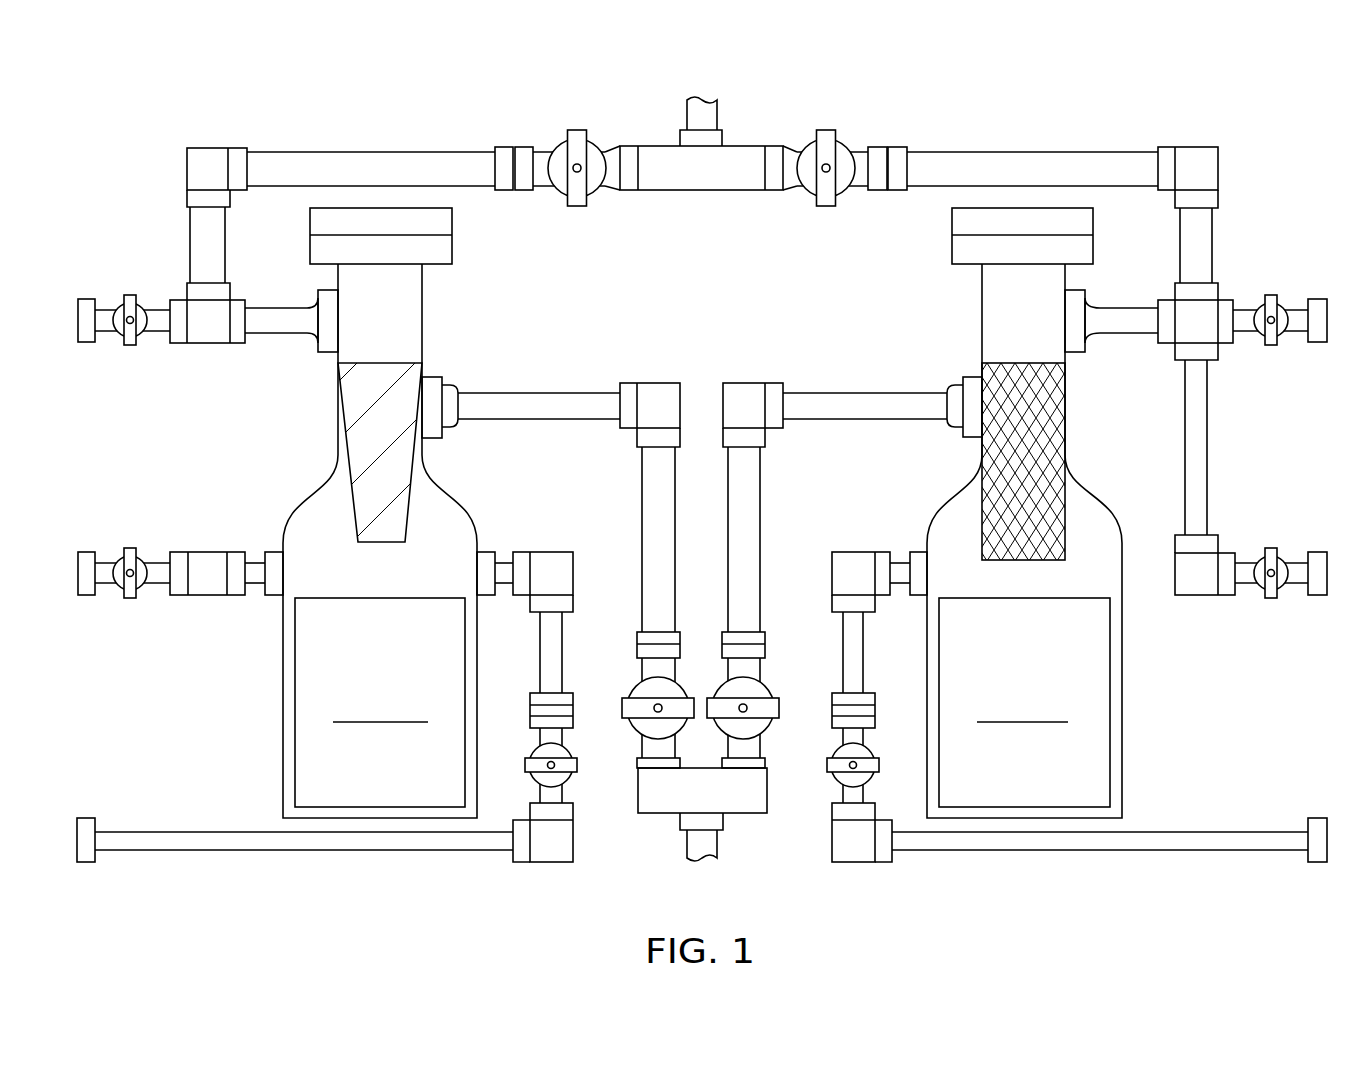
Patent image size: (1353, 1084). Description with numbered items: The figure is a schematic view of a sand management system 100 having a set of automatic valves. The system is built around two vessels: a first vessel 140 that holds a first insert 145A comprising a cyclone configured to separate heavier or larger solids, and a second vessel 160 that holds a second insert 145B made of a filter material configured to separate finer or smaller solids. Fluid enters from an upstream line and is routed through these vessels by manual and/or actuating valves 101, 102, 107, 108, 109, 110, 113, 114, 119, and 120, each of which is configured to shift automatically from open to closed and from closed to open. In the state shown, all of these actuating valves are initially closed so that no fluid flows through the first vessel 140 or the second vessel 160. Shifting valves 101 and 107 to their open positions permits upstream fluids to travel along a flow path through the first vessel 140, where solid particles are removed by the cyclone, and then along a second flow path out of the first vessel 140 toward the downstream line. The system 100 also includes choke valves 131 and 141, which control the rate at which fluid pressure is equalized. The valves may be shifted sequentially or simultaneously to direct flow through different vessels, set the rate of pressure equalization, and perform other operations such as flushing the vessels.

The sand management system 100 is at (134, 93).
The actuating valve 101 is at (626, 699).
The actuating valve 102 is at (776, 699).
The actuating valve 107 is at (577, 130).
The actuating valve 108 is at (826, 130).
The actuating valve 109 is at (130, 296).
The actuating valve 110 is at (1271, 296).
The actuating valve 113 is at (130, 549).
The actuating valve 114 is at (1271, 549).
The actuating valve 119 is at (575, 772).
The actuating valve 120 is at (829, 772).
The choke valve 131 is at (88, 345).
The choke valve 141 is at (1318, 345).
The first vessel 140 is at (283, 680).
The second vessel 160 is at (1122, 680).
The first insert 145A is at (444, 311).
The second insert 145B is at (955, 300).